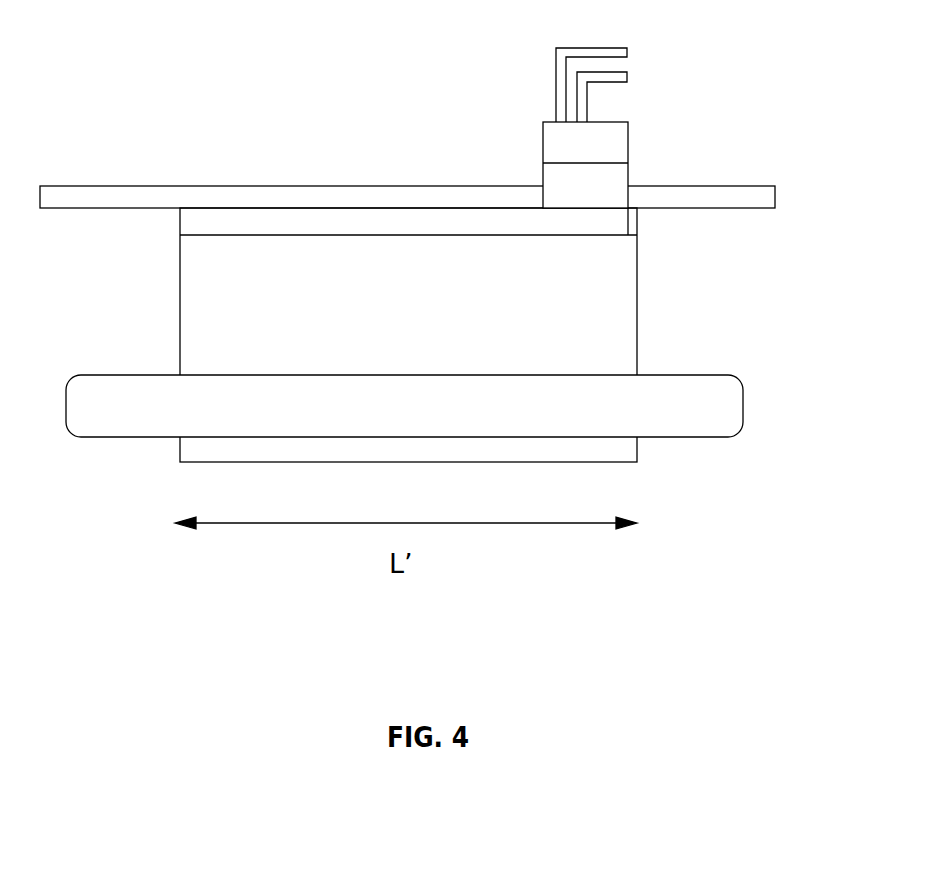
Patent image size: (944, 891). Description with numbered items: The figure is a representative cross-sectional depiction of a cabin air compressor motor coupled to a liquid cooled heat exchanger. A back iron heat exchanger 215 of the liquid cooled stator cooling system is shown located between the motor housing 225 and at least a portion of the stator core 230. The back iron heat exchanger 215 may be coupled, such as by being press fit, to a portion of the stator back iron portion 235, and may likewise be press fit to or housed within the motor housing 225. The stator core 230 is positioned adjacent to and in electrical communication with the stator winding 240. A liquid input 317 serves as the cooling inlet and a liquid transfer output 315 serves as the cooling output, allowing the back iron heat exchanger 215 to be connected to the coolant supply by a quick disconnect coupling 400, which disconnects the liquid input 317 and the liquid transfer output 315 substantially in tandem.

The back iron heat exchanger 215 is at (628, 218).
The motor housing 225 is at (183, 186).
The stator core 230 is at (637, 313).
The stator back iron portion 235 is at (573, 238).
The stator winding 240 is at (743, 403).
The liquid transfer output 315 is at (627, 52).
The liquid input 317 is at (627, 77).
The quick disconnect coupling 400 is at (628, 136).